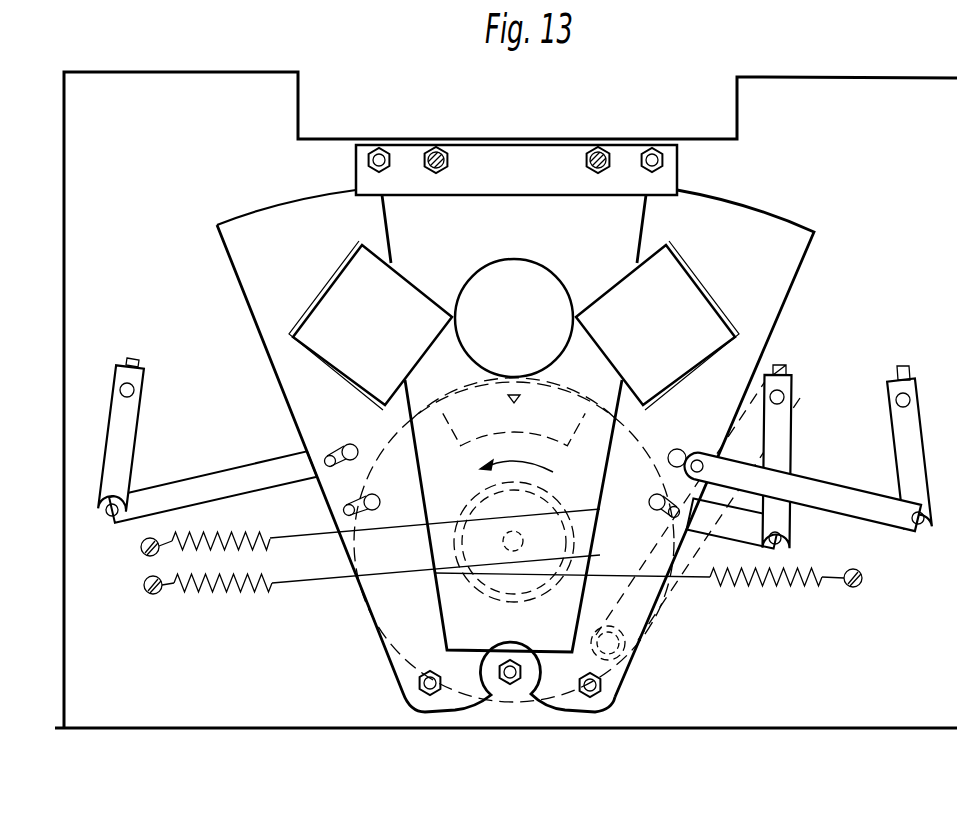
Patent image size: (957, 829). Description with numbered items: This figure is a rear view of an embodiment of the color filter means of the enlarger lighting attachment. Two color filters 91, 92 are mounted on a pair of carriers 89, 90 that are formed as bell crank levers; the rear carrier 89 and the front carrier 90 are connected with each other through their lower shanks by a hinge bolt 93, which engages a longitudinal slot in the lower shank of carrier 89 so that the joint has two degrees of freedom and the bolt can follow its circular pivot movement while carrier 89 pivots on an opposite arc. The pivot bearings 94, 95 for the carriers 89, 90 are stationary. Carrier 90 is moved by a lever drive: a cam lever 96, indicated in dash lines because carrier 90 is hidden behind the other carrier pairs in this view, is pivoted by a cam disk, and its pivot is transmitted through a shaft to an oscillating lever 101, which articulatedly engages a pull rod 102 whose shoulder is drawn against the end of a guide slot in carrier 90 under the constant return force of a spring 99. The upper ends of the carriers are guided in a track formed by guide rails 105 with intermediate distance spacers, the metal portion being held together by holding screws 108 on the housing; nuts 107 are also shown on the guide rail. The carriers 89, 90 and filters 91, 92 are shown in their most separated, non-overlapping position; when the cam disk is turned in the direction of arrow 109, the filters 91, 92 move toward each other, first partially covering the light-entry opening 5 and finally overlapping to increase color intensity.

The opening 5 is at (528, 278).
The carrier 89 is at (267, 217).
The carrier 90 is at (778, 232).
The color filter 91 is at (397, 288).
The color filter 92 is at (628, 290).
The hinge bolt 93 is at (513, 683).
The pivot bearing 94 is at (423, 693).
The pivot bearing 95 is at (597, 695).
The cam lever 96 is at (800, 388).
The spring 99 is at (800, 583).
The oscillating lever 101 is at (783, 457).
The pull rod 102 is at (737, 528).
The guide rail 105 is at (365, 178).
The nut 107 is at (379, 150).
The holding screw 108 is at (436, 152).
The arrow 109 is at (520, 460).